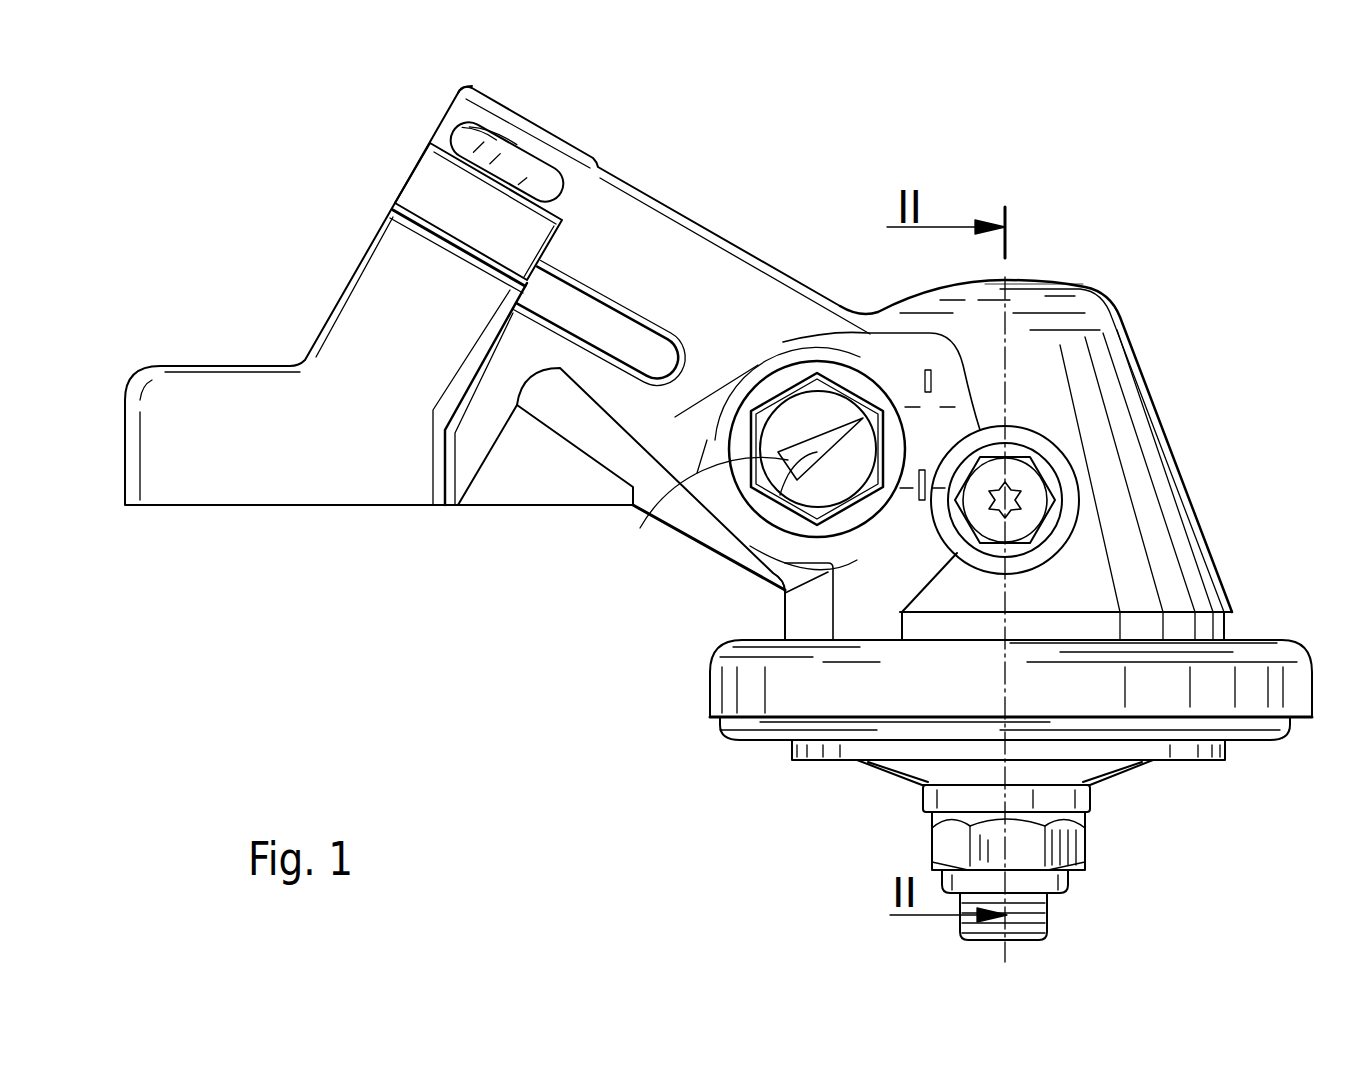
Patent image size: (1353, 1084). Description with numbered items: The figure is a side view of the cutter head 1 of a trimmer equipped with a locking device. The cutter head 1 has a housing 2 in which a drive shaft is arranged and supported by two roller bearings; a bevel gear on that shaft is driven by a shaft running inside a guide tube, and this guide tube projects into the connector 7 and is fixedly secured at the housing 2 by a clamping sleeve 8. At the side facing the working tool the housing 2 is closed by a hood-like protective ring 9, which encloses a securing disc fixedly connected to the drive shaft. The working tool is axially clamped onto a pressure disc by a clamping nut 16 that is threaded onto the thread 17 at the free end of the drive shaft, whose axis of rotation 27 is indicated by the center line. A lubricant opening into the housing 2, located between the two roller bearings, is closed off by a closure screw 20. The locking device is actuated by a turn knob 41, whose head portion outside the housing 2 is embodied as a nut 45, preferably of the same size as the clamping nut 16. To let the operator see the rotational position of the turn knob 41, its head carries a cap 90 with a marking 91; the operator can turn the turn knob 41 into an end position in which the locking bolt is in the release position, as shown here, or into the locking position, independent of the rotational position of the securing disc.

The cutter head 1 is at (1205, 362).
The housing 2 is at (1183, 563).
The connector 7 is at (678, 238).
The clamping sleeve 8 is at (383, 265).
The protective ring 9 is at (1278, 655).
The clamping nut 16 is at (1067, 845).
The thread 17 is at (1043, 910).
The closure screw 20 is at (1037, 483).
The axis of rotation 27 is at (1010, 306).
The turn knob 41 is at (840, 358).
The nut 45 is at (660, 518).
The cap 90 is at (795, 501).
The marking 91 is at (775, 556).